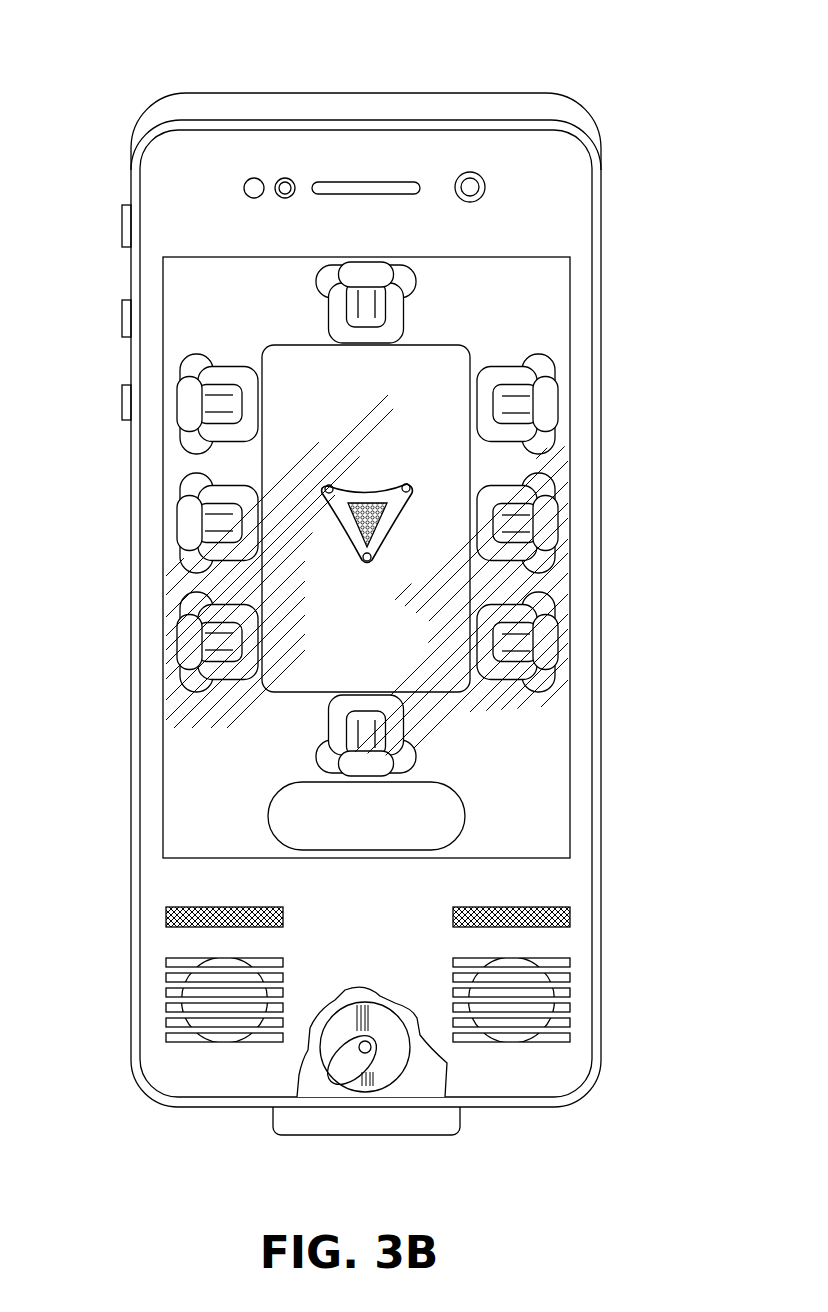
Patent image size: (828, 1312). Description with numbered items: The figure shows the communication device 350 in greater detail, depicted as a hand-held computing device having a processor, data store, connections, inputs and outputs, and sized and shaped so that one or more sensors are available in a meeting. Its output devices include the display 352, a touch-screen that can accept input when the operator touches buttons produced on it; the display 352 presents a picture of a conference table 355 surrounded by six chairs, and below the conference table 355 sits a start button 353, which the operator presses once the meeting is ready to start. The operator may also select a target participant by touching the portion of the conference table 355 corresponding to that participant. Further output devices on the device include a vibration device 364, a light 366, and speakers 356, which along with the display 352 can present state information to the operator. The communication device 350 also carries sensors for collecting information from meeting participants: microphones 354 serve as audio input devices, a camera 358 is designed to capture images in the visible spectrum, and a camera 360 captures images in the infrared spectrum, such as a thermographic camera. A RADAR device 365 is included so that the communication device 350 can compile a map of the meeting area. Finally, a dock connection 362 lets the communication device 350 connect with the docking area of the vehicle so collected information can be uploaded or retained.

The communication device 350 is at (598, 153).
The display 352 is at (358, 548).
The start button 353 is at (465, 810).
The microphones 354 is at (572, 916).
The conference table 355 is at (260, 593).
The speakers 356 is at (570, 978).
The camera 358 is at (470, 172).
The camera 360 is at (286, 178).
The dock connection 362 is at (434, 1120).
The vibration device 364 is at (390, 1068).
The RADAR device 365 is at (207, 92).
The light 366 is at (254, 178).